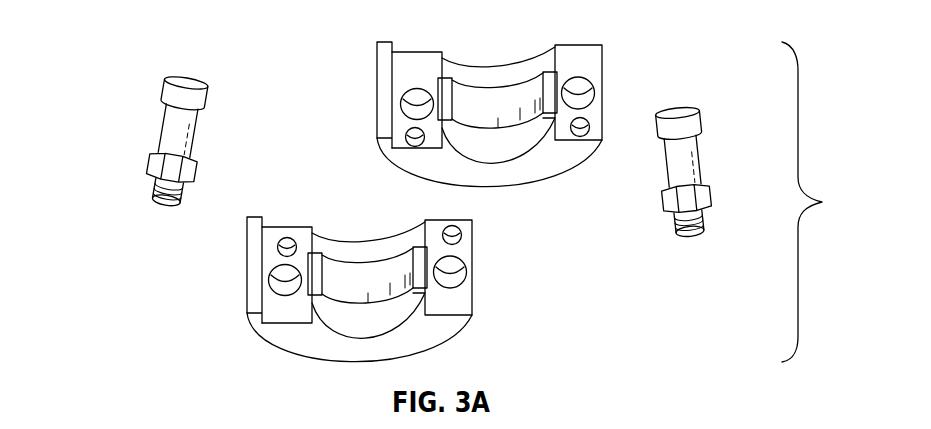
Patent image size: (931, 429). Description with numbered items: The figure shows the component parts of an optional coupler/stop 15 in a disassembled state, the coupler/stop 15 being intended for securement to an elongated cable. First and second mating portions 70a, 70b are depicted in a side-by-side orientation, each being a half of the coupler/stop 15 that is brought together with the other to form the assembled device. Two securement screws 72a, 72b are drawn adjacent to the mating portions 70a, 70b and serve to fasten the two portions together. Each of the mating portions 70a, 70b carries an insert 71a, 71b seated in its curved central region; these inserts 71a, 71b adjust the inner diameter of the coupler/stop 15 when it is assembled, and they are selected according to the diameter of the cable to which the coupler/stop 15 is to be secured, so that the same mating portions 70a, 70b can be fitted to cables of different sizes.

The coupler/stop 15 is at (817, 202).
The first mating portion 70a is at (384, 73).
The second mating portion 70b is at (463, 294).
The insert 71a is at (503, 110).
The insert 71b is at (375, 272).
The securement screw 72a is at (172, 127).
The securement screw 72b is at (690, 156).